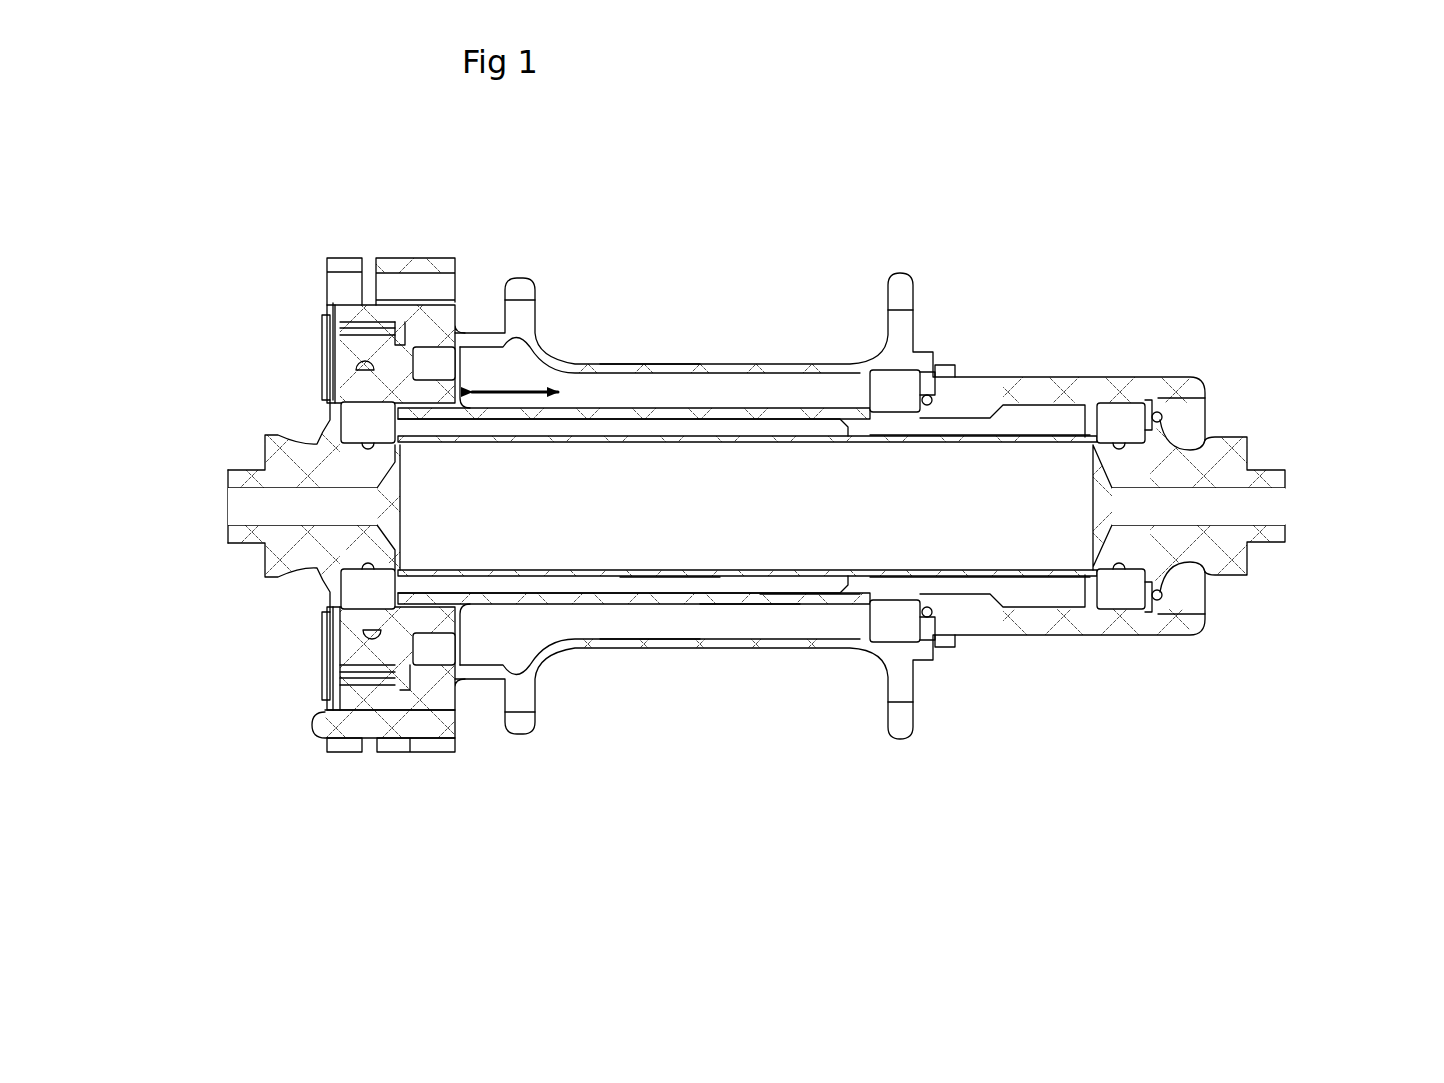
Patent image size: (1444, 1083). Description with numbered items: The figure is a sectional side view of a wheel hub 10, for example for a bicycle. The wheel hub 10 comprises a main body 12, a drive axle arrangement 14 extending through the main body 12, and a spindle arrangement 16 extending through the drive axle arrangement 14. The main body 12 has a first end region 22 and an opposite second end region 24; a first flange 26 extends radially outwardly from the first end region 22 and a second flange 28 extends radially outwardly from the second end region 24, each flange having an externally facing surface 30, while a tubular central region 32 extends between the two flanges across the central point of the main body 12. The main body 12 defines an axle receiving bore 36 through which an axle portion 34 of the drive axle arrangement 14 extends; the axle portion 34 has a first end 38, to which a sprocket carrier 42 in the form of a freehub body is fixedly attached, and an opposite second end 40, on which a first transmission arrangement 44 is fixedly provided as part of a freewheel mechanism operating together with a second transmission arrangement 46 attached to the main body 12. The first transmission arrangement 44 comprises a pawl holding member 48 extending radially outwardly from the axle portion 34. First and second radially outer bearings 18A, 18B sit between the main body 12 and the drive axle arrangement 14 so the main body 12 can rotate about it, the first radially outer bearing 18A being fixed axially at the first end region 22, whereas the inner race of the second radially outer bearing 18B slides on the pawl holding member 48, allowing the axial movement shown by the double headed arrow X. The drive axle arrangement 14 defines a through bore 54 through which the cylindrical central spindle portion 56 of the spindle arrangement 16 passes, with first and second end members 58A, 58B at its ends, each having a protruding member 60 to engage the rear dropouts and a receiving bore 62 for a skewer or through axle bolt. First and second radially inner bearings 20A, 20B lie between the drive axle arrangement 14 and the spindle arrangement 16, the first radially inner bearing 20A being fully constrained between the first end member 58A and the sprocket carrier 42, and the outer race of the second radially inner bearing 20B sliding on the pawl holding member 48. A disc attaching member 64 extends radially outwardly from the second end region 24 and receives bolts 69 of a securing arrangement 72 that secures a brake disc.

The wheel hub 10 is at (692, 310).
The main body 12 is at (748, 360).
The drive axle arrangement 14 is at (745, 606).
The spindle arrangement 16 is at (672, 580).
The first radially outer bearing 18A is at (899, 392).
The second radially outer bearing 18B is at (436, 358).
The first radially inner bearing 20A is at (1123, 417).
The second radially inner bearing 20B is at (360, 430).
The first end region 22 is at (930, 655).
The second end region 24 is at (481, 334).
The first flange 26 is at (908, 735).
The second flange 28 is at (524, 732).
The externally facing surface 30 is at (900, 274).
The tubular central region 32 is at (602, 364).
The axle portion 34 is at (812, 602).
The axle receiving bore 36 is at (597, 640).
The first end 38 is at (957, 590).
The second end 40 is at (436, 601).
The sprocket carrier 42 is at (1107, 630).
The first transmission arrangement 44 is at (362, 643).
The second transmission arrangement 46 is at (400, 256).
The pawl holding member 48 is at (356, 383).
The through bore 54 is at (627, 420).
The central spindle portion 56 is at (897, 487).
The first end member 58A is at (1248, 452).
The second end member 58B is at (264, 451).
The protruding member 60 is at (229, 534).
The receiving bore 62 is at (1222, 514).
The disc attaching member 64 is at (440, 757).
The bolts 69 is at (355, 725).
The securing arrangement 72 is at (322, 651).
The double headed arrow X is at (516, 386).